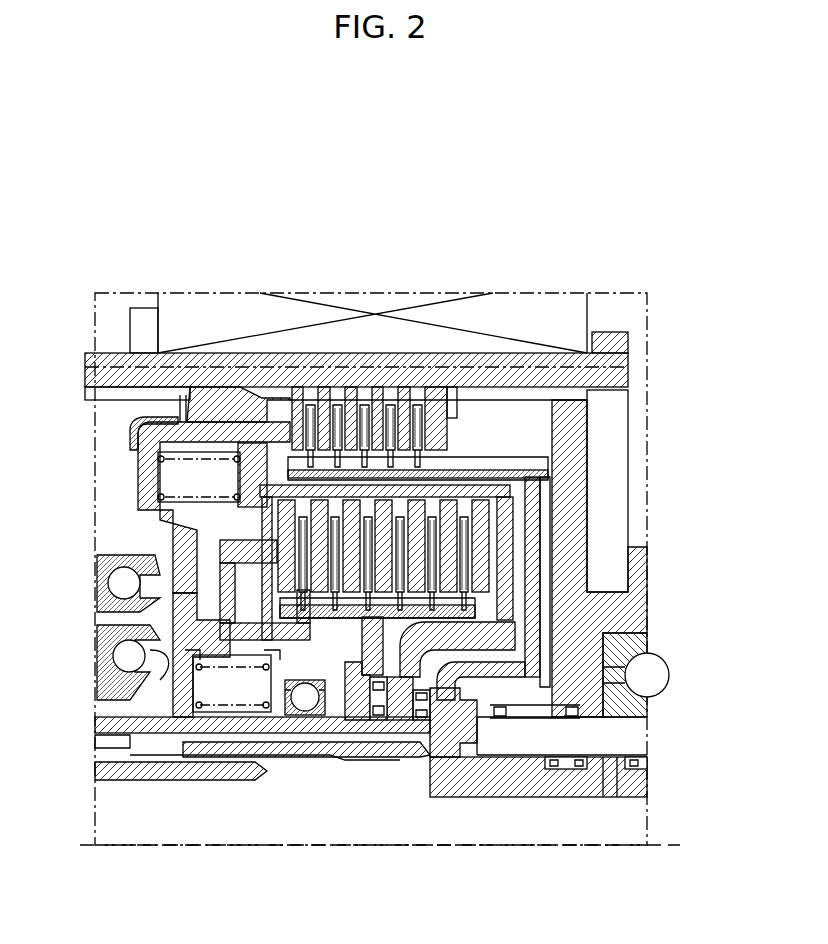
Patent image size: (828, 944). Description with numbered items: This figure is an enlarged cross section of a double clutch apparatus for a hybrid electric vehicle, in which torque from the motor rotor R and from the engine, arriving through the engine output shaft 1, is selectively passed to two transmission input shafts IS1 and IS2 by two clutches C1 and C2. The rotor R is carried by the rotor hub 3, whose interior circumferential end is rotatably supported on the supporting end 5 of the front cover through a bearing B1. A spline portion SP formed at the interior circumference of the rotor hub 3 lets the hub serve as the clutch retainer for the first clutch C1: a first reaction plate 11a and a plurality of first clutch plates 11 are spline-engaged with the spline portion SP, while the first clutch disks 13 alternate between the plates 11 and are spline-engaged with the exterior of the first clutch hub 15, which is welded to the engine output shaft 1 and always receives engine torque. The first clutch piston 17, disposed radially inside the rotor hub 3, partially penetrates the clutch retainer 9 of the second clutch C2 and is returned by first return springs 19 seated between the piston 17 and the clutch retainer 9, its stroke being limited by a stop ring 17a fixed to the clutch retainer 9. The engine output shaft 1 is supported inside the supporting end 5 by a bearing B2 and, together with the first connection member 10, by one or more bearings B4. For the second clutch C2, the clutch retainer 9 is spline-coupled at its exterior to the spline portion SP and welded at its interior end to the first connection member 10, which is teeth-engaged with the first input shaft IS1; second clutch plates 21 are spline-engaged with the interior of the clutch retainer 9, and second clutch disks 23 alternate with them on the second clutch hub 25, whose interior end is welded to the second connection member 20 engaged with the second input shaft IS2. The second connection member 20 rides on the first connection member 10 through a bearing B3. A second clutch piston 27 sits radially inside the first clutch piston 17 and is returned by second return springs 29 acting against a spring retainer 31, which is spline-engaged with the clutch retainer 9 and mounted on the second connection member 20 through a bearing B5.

The rotor R is at (300, 312).
The spline portion SP is at (248, 390).
The rotor hub 3 is at (483, 360).
The first clutch disks 13 is at (333, 405).
The first clutch plates 11 is at (378, 408).
The first reaction plate 11a is at (455, 435).
The first clutch C1 is at (493, 350).
The second clutch C2 is at (477, 562).
The first clutch hub 15 is at (520, 472).
The second clutch plates 21 is at (435, 547).
The second clutch disks 23 is at (420, 560).
The second clutch hub 25 is at (520, 622).
The bearing B1 is at (630, 643).
The bearing B2 is at (640, 768).
The bearing B3 is at (385, 735).
The bearings B4 is at (420, 695).
The bearing B5 is at (300, 716).
The supporting end 5 is at (506, 745).
The engine output shaft 1 is at (550, 780).
The first connection member 10 is at (370, 760).
The second connection member 20 is at (240, 727).
The second return springs 29 is at (200, 712).
The first input shaft IS1 is at (167, 773).
The second input shaft IS2 is at (115, 747).
The second clutch piston 27 is at (220, 603).
The spring retainer 31 is at (262, 590).
The first clutch piston 17 is at (150, 518).
The stop ring 17a is at (130, 442).
The first return springs 19 is at (252, 453).
The clutch retainer 9 is at (157, 485).